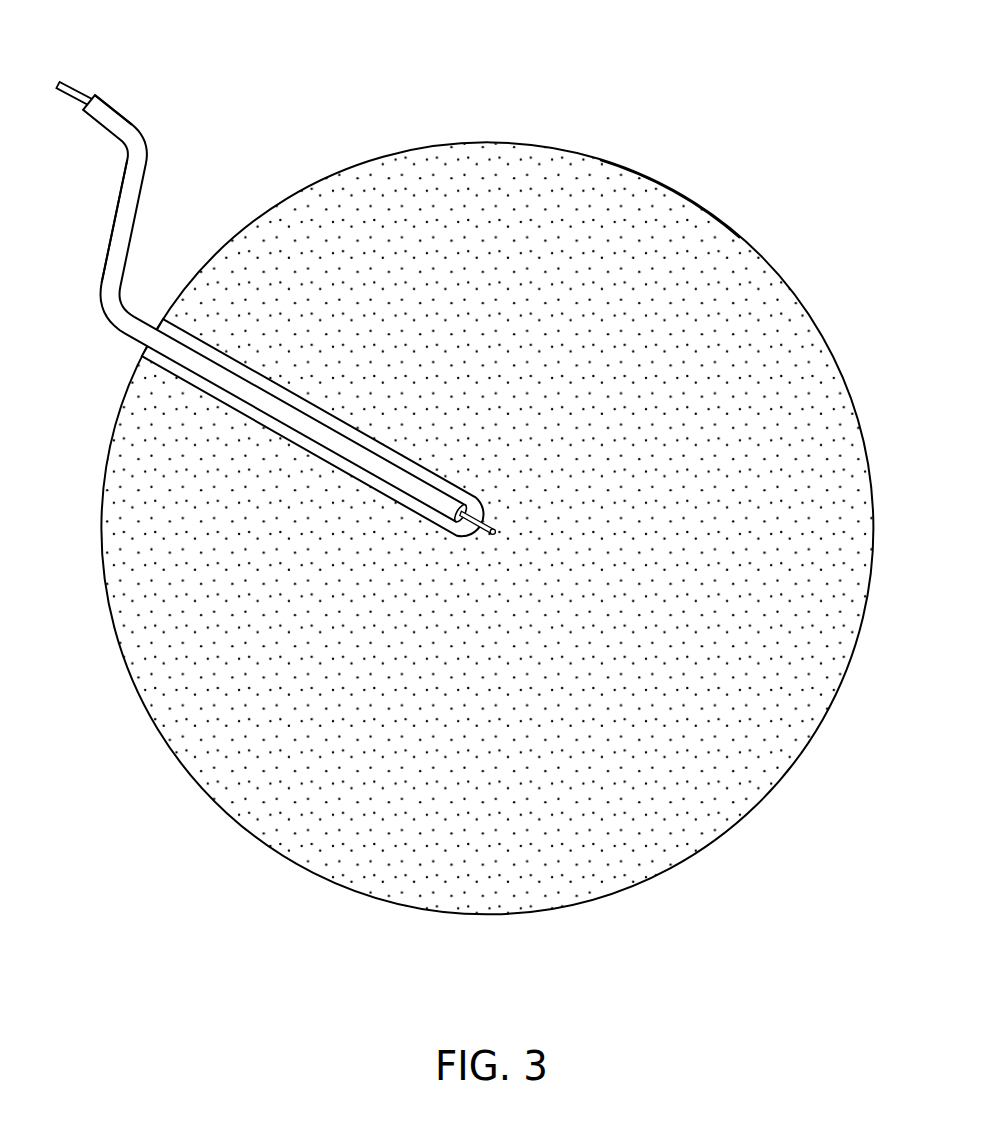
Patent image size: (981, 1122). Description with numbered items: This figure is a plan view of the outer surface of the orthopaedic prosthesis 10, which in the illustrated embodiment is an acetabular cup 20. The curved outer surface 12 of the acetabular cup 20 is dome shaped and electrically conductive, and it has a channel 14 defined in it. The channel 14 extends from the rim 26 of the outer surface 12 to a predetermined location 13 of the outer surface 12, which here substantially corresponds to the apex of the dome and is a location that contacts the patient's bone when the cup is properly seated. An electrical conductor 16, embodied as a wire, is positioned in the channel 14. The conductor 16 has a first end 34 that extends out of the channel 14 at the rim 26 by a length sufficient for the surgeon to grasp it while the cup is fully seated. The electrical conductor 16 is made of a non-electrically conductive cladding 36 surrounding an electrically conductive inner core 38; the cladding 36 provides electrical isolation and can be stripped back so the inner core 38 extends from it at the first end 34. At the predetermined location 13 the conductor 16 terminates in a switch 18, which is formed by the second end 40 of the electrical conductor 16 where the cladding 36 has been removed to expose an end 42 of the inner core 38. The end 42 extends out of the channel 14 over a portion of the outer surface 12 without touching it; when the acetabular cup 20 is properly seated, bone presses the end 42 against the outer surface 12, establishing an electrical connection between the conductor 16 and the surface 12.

The orthopaedic prosthesis 10 is at (635, 90).
The curved outer surface 12 is at (741, 238).
The predetermined location 13 is at (487, 468).
The channel 14 is at (313, 454).
The electrical conductor 16 is at (136, 210).
The switch 18 is at (487, 565).
The acetabular cup 20 is at (668, 188).
The rim 26 is at (827, 345).
The first end 34 is at (130, 69).
The non-electrically conductive cladding 36 is at (126, 165).
The electrically conductive inner core 38 is at (75, 88).
The second end 40 is at (450, 563).
The end of the inner core 42 is at (516, 522).